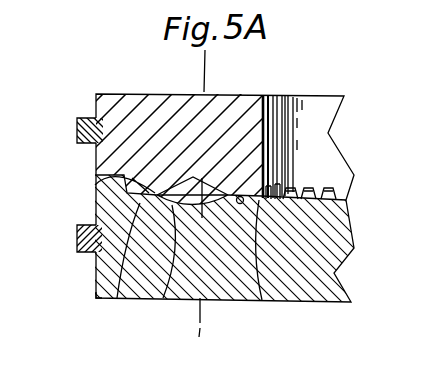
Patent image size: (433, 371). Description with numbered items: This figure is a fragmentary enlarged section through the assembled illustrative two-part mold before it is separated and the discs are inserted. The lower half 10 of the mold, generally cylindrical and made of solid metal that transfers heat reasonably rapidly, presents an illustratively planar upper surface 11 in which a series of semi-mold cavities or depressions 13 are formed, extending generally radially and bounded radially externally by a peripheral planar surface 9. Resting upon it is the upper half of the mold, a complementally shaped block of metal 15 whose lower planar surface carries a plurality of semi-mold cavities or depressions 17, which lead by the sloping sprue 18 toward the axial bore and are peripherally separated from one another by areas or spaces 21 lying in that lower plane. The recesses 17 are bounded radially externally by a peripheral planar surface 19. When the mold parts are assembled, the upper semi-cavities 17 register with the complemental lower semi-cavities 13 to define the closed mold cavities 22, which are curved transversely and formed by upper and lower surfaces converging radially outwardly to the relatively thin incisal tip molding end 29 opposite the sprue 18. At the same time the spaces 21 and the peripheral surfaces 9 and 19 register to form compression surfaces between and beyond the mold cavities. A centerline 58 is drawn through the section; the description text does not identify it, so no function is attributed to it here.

The block of metal 15 is at (97, 100).
The lower half 10 is at (94, 279).
The peripheral planar surface 19 is at (97, 165).
The mold cavities 22 is at (203, 186).
The semi-mold cavities 17 is at (179, 183).
The areas or spaces 21 is at (229, 190).
The sloping sprue 18 is at (244, 185).
The weld centerline 58 is at (218, 192).
The peripheral planar surface 9 is at (96, 297).
The incisal tip molding end 29 is at (116, 298).
The semi-mold cavities 13 is at (164, 299).
The upper surface 11 is at (262, 300).